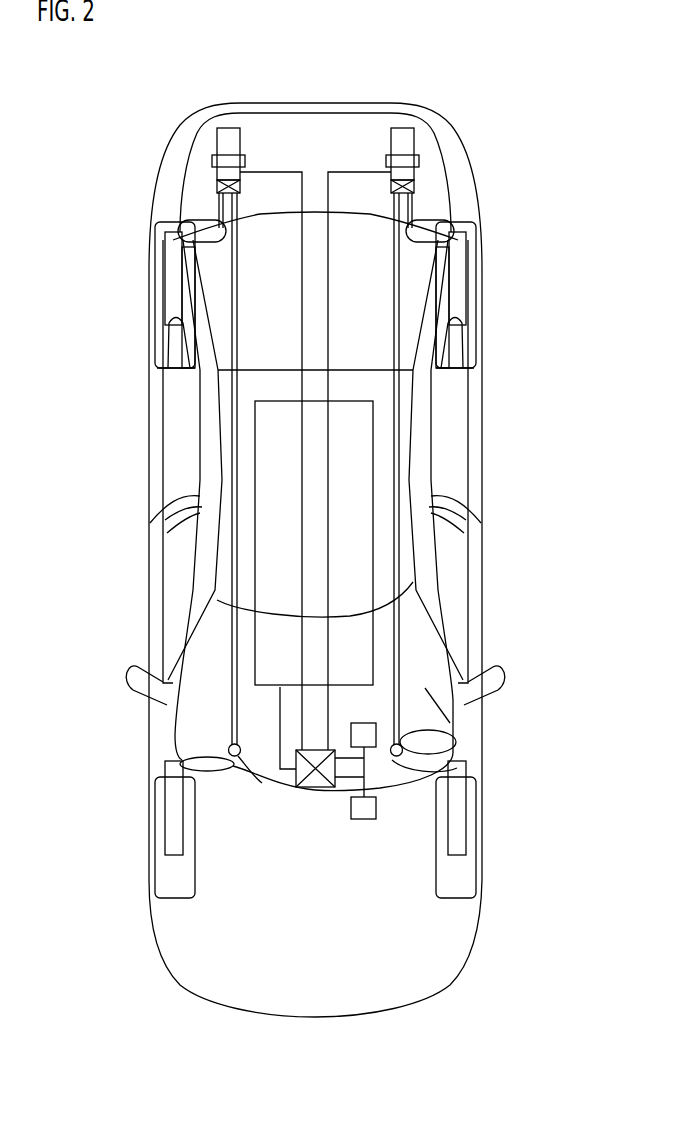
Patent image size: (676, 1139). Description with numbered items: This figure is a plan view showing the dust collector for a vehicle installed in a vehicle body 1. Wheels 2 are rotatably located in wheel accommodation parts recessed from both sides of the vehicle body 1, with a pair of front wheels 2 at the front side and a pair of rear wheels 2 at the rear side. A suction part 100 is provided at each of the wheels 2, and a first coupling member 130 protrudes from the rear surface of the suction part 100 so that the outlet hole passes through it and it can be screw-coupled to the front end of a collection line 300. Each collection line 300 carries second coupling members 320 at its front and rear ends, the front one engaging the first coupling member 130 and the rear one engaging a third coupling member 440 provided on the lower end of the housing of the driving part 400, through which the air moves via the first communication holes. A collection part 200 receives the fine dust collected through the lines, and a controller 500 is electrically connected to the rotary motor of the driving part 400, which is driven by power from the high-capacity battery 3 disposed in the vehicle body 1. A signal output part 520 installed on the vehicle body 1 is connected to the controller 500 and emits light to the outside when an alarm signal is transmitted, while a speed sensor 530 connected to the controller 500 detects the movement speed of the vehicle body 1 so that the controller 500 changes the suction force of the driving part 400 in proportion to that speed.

The vehicle body 1 is at (150, 472).
The wheels 2 is at (153, 297).
The battery 3 is at (373, 452).
The suction part 100 is at (170, 262).
The first coupling member 130 is at (455, 755).
The collection part 200 is at (227, 127).
The collection line 300 is at (401, 220).
The second coupling member 320 is at (413, 237).
The driving part 400 is at (213, 167).
The third coupling member 440 is at (411, 191).
The controller 500 is at (315, 788).
The signal output part 520 is at (375, 722).
The speed sensor 530 is at (362, 820).